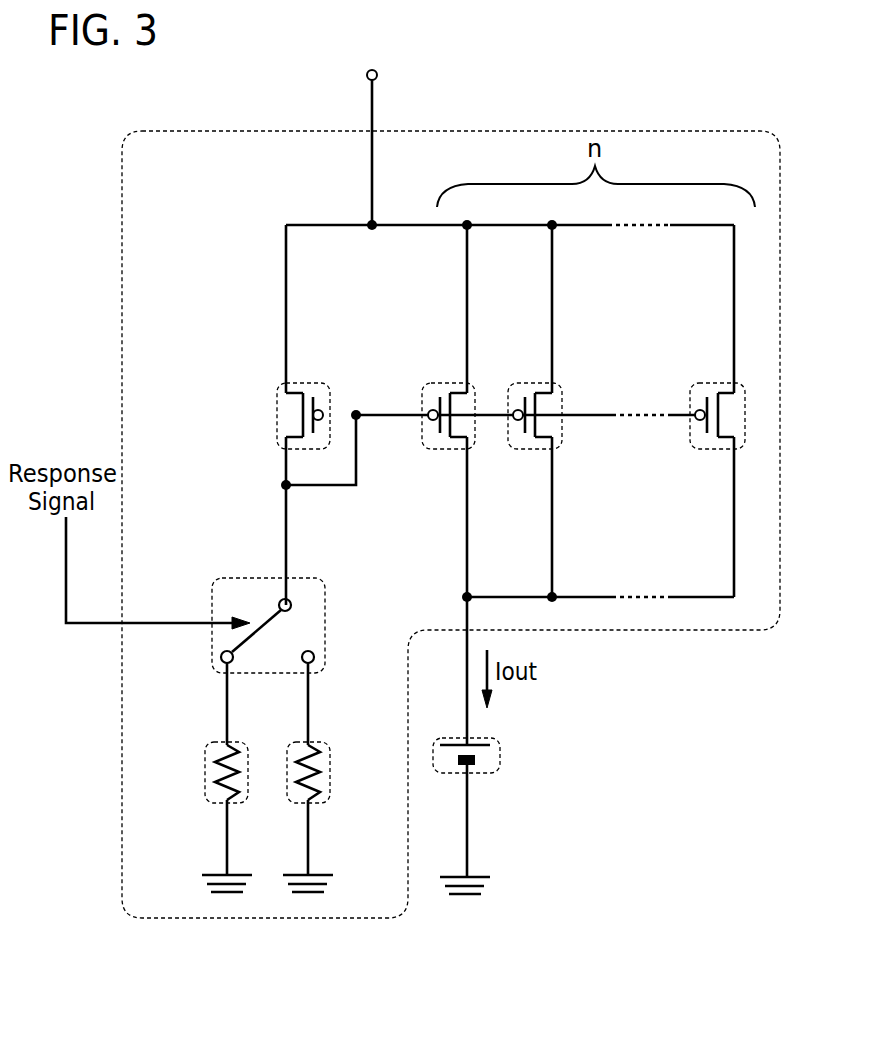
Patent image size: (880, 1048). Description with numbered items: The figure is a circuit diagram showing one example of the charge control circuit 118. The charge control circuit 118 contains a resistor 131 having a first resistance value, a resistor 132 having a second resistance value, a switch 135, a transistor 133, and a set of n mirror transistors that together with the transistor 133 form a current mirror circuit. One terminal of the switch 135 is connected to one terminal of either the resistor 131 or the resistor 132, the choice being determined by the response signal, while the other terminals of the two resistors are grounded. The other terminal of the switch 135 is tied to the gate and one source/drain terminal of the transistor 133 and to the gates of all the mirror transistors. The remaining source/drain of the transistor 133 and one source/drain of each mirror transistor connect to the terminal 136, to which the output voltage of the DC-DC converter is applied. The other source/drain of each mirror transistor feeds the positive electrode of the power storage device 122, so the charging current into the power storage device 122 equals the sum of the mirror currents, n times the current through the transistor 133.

The charge control circuit 118 is at (680, 632).
The power storage device 122 is at (443, 775).
The resistor 131 is at (205, 773).
The resistor 132 is at (331, 775).
The transistor 133 is at (277, 416).
The switch 135 is at (327, 617).
The terminal 136 is at (366, 76).